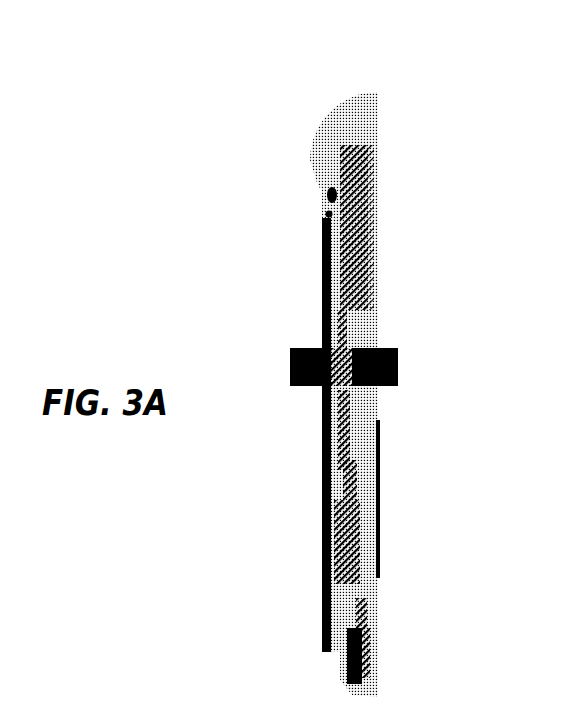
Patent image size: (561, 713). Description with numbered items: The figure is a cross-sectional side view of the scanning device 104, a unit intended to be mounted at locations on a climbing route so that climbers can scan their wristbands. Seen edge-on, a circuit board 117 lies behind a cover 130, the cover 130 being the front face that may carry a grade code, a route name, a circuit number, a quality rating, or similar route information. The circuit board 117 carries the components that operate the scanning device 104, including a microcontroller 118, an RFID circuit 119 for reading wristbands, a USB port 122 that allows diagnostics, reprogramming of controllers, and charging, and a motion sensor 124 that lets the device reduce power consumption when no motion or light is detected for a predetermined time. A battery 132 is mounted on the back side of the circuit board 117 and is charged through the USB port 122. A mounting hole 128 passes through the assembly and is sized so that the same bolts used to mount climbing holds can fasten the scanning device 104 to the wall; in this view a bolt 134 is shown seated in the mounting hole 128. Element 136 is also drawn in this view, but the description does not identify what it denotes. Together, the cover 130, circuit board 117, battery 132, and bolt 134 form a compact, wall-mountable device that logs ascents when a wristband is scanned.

The scanning device 104 is at (266, 77).
The circuit board 117 is at (360, 614).
The microcontroller 118 is at (345, 568).
The RFID circuit 119 is at (335, 258).
The USB port 122 is at (353, 667).
The motion sensor 124 is at (322, 192).
The mounting hole 128 is at (384, 348).
The cover 130 is at (327, 421).
The battery 132 is at (362, 179).
The bolt 134 is at (398, 370).
The cover 136 is at (380, 496).